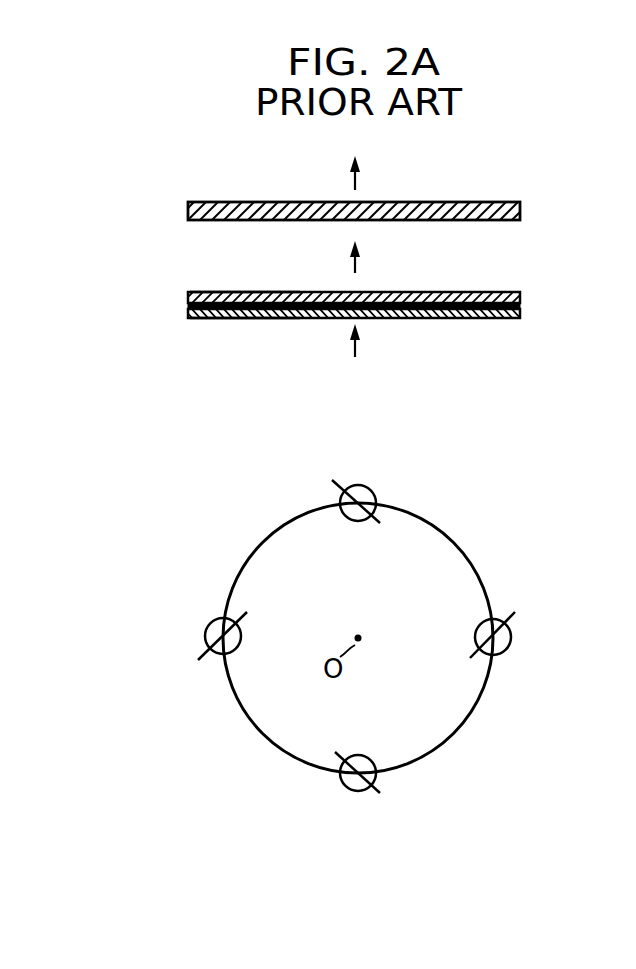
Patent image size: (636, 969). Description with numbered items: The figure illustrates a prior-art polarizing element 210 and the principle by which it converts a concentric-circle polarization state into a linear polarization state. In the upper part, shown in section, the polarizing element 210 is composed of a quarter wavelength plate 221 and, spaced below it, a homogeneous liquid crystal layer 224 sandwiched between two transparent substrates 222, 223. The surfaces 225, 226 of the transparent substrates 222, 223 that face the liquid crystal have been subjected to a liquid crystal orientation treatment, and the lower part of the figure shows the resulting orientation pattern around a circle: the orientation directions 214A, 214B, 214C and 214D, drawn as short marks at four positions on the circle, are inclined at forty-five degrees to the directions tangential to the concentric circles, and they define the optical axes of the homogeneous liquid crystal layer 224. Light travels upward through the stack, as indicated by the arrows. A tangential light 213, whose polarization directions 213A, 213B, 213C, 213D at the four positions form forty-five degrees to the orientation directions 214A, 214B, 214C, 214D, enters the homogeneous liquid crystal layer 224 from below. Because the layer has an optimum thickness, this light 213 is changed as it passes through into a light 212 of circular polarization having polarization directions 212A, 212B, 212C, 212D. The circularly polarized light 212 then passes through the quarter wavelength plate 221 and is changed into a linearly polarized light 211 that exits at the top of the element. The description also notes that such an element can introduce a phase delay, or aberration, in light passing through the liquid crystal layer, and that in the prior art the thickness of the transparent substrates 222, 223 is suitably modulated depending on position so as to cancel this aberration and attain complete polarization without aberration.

The polarizing element 210 is at (582, 377).
The linearly polarized light 211 is at (352, 181).
The light of circular polarization 212 is at (352, 269).
The tangential light 213 is at (351, 334).
The quarter wavelength plate 221 is at (188, 215).
The transparent substrate 222 is at (188, 298).
The transparent substrate 223 is at (188, 313).
The homogeneous liquid crystal layer 224 is at (188, 306).
The surface of transparent substrate 225 is at (246, 291).
The surface of transparent substrate 226 is at (244, 319).
The polarization direction 212A is at (373, 794).
The polarization direction 212B is at (495, 597).
The polarization direction 212C is at (352, 486).
The polarization direction 212D is at (168, 651).
The polarization direction 213A is at (375, 779).
The polarization direction 213B is at (496, 620).
The polarization direction 213C is at (340, 503).
The polarization direction 213D is at (219, 654).
The liquid crystal orientation direction 214A is at (374, 796).
The liquid crystal orientation direction 214B is at (517, 612).
The liquid crystal orientation direction 214C is at (335, 482).
The liquid crystal orientation direction 214D is at (201, 658).